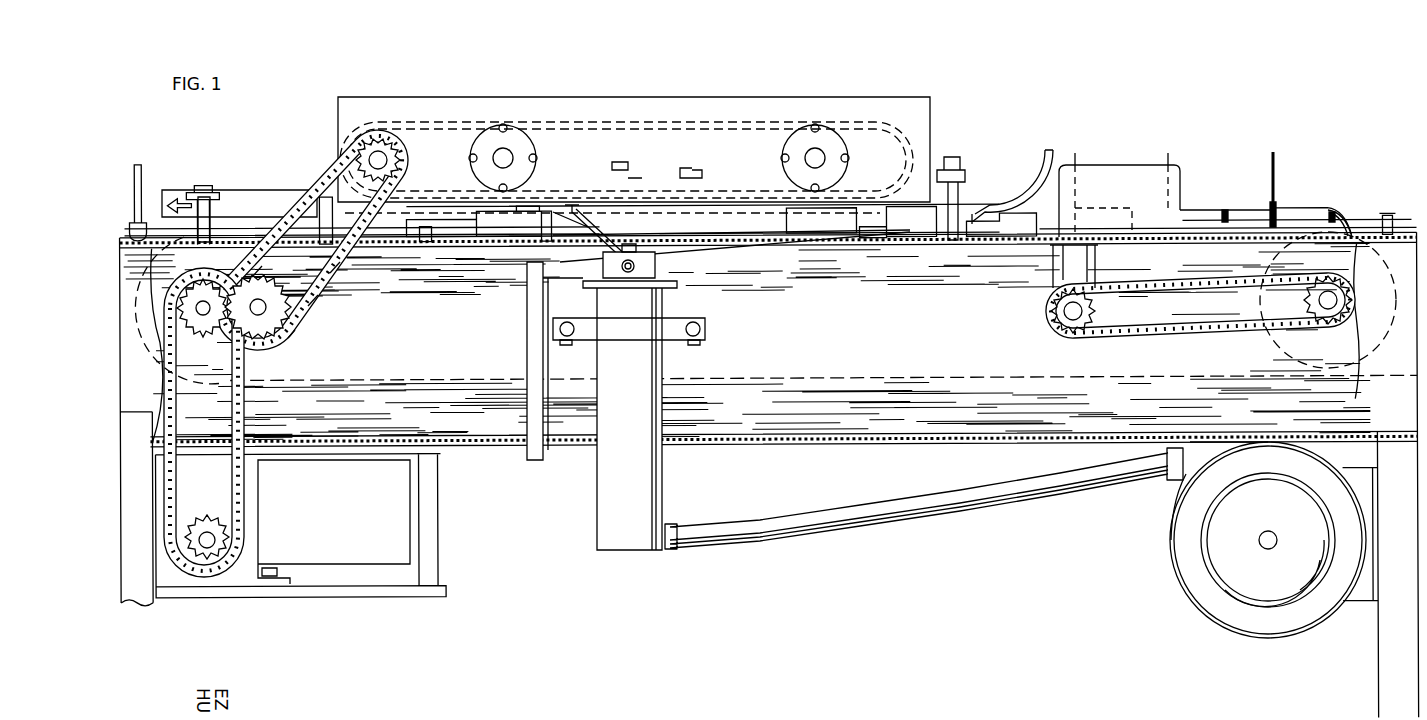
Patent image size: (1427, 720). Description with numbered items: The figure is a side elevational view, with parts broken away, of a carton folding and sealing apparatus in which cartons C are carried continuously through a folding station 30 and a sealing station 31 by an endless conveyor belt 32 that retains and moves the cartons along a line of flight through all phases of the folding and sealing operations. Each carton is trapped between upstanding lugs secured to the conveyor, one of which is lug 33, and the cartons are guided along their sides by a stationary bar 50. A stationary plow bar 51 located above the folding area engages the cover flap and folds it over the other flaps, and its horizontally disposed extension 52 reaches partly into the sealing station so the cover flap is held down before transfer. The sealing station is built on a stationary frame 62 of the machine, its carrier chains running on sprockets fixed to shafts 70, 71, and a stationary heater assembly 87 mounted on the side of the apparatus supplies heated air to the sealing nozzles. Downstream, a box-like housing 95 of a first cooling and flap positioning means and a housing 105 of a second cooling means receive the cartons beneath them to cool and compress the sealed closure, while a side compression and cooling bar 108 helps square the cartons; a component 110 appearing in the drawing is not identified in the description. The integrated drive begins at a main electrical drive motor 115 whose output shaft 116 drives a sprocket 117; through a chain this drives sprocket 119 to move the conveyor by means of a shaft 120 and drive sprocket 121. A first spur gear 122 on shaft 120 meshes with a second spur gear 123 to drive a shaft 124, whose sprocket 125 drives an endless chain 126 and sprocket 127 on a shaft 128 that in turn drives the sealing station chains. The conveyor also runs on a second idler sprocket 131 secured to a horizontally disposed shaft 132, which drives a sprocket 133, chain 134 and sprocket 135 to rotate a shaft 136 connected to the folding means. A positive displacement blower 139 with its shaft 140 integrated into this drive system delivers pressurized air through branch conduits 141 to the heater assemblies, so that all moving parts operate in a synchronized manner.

The folding station 30 is at (1150, 148).
The sealing station 31 is at (858, 84).
The endless conveyor belt 32 is at (896, 376).
The upstanding lug 33 is at (1332, 210).
The stationary bar 50 is at (1345, 214).
The stationary plow bar 51 is at (1040, 178).
The horizontally disposed extension 52 is at (948, 244).
The stationary frame 62 is at (882, 344).
The shaft 70 is at (808, 158).
The shaft 71 is at (510, 158).
The stationary heater assembly 87 is at (690, 300).
The box-like housing 95 is at (697, 182).
The housing 105 is at (253, 194).
The side compression and cooling bar 108 is at (236, 235).
The plate 110 is at (698, 240).
The main electrical drive motor 115 is at (334, 522).
The output shaft 116 is at (215, 542).
The sprocket 117 is at (207, 516).
The sprocket 119 is at (185, 310).
The shaft 120 is at (203, 308).
The drive sprocket 121 is at (279, 271).
The first spur gear 122 is at (204, 422).
The second spur gear 123 is at (288, 340).
The shaft 124 is at (272, 312).
The sprocket 125 is at (312, 302).
The endless chain 126 is at (330, 270).
The sprocket 127 is at (350, 163).
The shaft 128 is at (392, 157).
The second idler sprocket 131 is at (1268, 260).
The horizontally disposed shaft 132 is at (1338, 297).
The sprocket 133 is at (1350, 306).
The chain 134 is at (1055, 339).
The sprocket 135 is at (1050, 312).
The shaft 136 is at (1065, 302).
The blower 139 is at (1172, 517).
The blower shaft 140 is at (1263, 532).
The branch conduits 141 is at (1000, 498).
The cartons C is at (1227, 208).